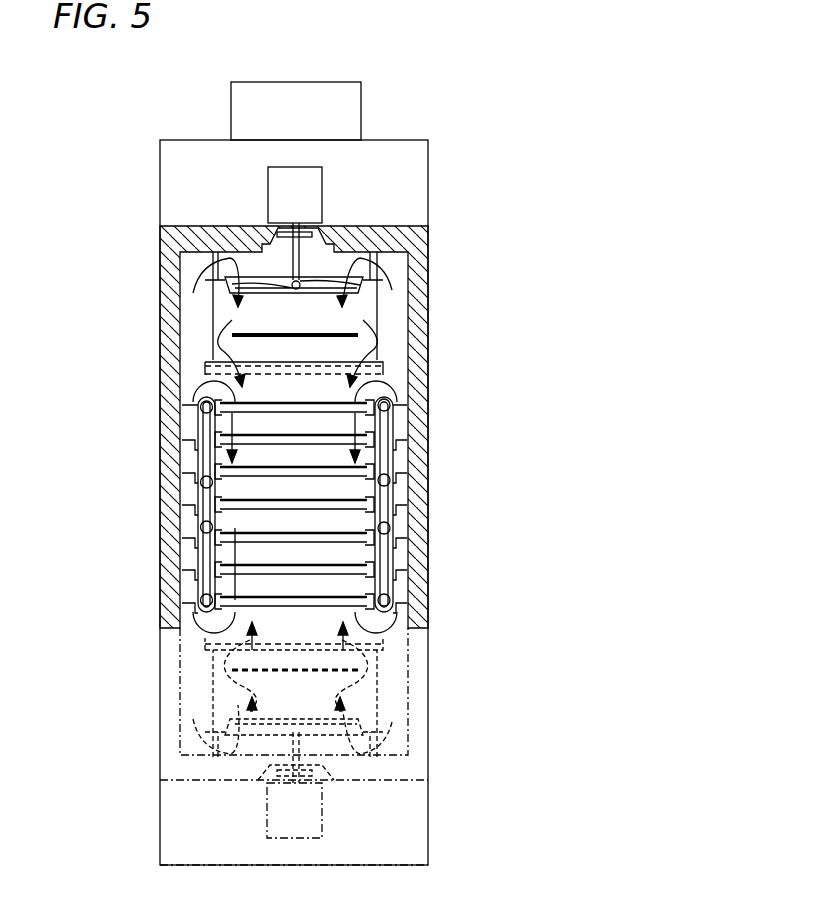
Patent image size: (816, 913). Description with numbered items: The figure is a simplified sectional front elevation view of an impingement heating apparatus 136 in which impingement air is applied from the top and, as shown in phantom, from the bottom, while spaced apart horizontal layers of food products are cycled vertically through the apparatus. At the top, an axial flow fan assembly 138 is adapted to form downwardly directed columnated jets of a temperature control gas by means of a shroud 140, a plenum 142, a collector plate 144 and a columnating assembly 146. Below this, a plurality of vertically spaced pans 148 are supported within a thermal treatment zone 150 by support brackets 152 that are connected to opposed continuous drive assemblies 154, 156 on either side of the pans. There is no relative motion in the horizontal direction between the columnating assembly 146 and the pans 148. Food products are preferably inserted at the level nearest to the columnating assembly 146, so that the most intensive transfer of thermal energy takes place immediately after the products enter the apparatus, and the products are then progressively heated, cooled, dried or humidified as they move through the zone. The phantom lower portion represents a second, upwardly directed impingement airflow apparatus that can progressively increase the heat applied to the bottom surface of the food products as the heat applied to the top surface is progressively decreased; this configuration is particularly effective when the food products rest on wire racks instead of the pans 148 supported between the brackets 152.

The impingement heating apparatus 136 is at (458, 123).
The axial flow fan assembly 138 is at (262, 193).
The shroud 140 is at (363, 286).
The plenum 142 is at (212, 322).
The collector plate 144 is at (275, 333).
The columnating assembly 146 is at (285, 378).
The pans 148 is at (338, 472).
The thermal treatment zone 150 is at (188, 462).
The support brackets 152 is at (225, 513).
The continuous drive assembly 154 is at (193, 405).
The continuous drive assembly 156 is at (396, 530).